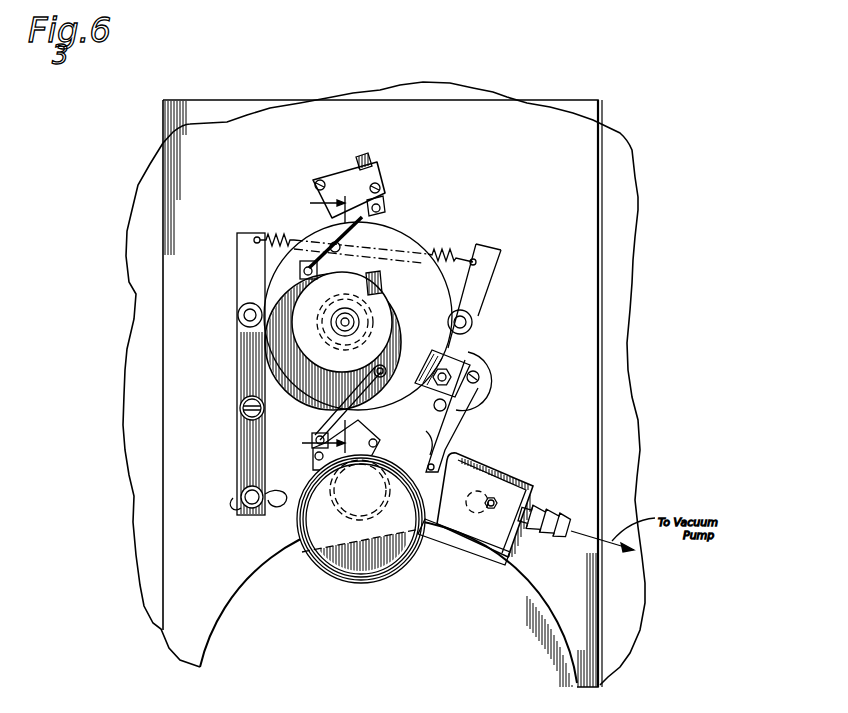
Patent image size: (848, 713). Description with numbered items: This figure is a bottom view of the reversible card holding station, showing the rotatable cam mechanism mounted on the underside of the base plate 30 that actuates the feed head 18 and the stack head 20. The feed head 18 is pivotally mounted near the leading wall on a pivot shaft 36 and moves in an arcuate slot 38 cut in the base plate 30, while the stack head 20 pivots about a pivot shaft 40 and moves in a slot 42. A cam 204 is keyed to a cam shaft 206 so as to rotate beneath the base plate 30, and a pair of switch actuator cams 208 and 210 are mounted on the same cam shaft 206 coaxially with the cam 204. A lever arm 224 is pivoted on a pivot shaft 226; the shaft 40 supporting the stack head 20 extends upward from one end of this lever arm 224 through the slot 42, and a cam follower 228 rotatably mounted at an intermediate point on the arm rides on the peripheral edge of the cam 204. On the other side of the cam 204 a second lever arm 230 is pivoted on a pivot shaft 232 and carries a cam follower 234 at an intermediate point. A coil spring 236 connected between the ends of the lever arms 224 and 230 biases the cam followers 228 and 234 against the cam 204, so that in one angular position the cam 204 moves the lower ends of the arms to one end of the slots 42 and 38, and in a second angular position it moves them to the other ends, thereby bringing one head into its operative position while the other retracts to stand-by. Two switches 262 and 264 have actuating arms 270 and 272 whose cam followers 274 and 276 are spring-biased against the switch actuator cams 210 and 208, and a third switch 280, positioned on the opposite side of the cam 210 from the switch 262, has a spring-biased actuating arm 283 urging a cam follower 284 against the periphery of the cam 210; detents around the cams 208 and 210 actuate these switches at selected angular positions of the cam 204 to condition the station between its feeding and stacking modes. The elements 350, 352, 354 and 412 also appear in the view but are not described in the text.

The vacuum pressure feed head 18 is at (488, 545).
The stack head 20 is at (240, 516).
The base plate 30 is at (249, 566).
The pivot shaft 36 is at (466, 503).
The arcuate slot 38 is at (522, 465).
The pivot shaft 40 is at (241, 498).
The slot 42 is at (276, 506).
The cam 204 is at (358, 227).
The cam shaft 206 is at (350, 321).
The switch actuator cam 208 is at (373, 281).
The switch actuator cam 210 is at (300, 324).
The lever arm 224 is at (250, 378).
The pivot shaft 226 is at (240, 416).
The cam follower 228 is at (238, 318).
The second lever arm 230 is at (478, 284).
The pivot shaft 232 is at (452, 374).
The cam follower 234 is at (472, 316).
The coil spring 236 is at (271, 238).
The switch 262 is at (371, 177).
The switch 264 is at (362, 180).
The actuating arm 270 is at (332, 243).
The actuating arm 272 is at (325, 252).
The cam follower 274 is at (302, 273).
The cam follower 276 is at (316, 283).
The third switch 280 is at (318, 463).
The actuating arm 283 is at (368, 386).
The cam follower 284 is at (384, 366).
The nut 350 is at (503, 504).
The spring hook 352 is at (416, 439).
The vacuum motor 354 is at (412, 482).
The hose fitting 412 is at (543, 511).